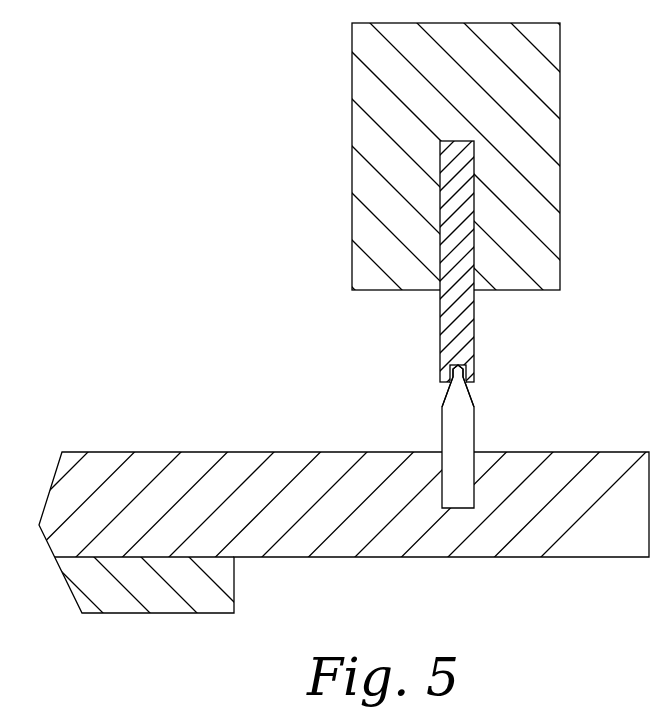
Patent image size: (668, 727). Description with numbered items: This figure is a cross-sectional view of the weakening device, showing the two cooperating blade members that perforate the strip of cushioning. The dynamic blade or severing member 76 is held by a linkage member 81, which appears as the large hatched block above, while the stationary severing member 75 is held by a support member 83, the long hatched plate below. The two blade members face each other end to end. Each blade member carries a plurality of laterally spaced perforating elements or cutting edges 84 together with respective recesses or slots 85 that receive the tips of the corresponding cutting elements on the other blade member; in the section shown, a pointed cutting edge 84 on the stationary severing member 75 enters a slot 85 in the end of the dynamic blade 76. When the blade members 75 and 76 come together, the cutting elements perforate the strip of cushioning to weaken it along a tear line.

The linkage member 81 is at (528, 108).
The dynamic blade or severing member 76 is at (473, 338).
The recess or slot 85 is at (457, 355).
The perforating element or cutting edge 84 is at (445, 388).
The stationary severing member 75 is at (457, 433).
The support member 83 is at (606, 470).